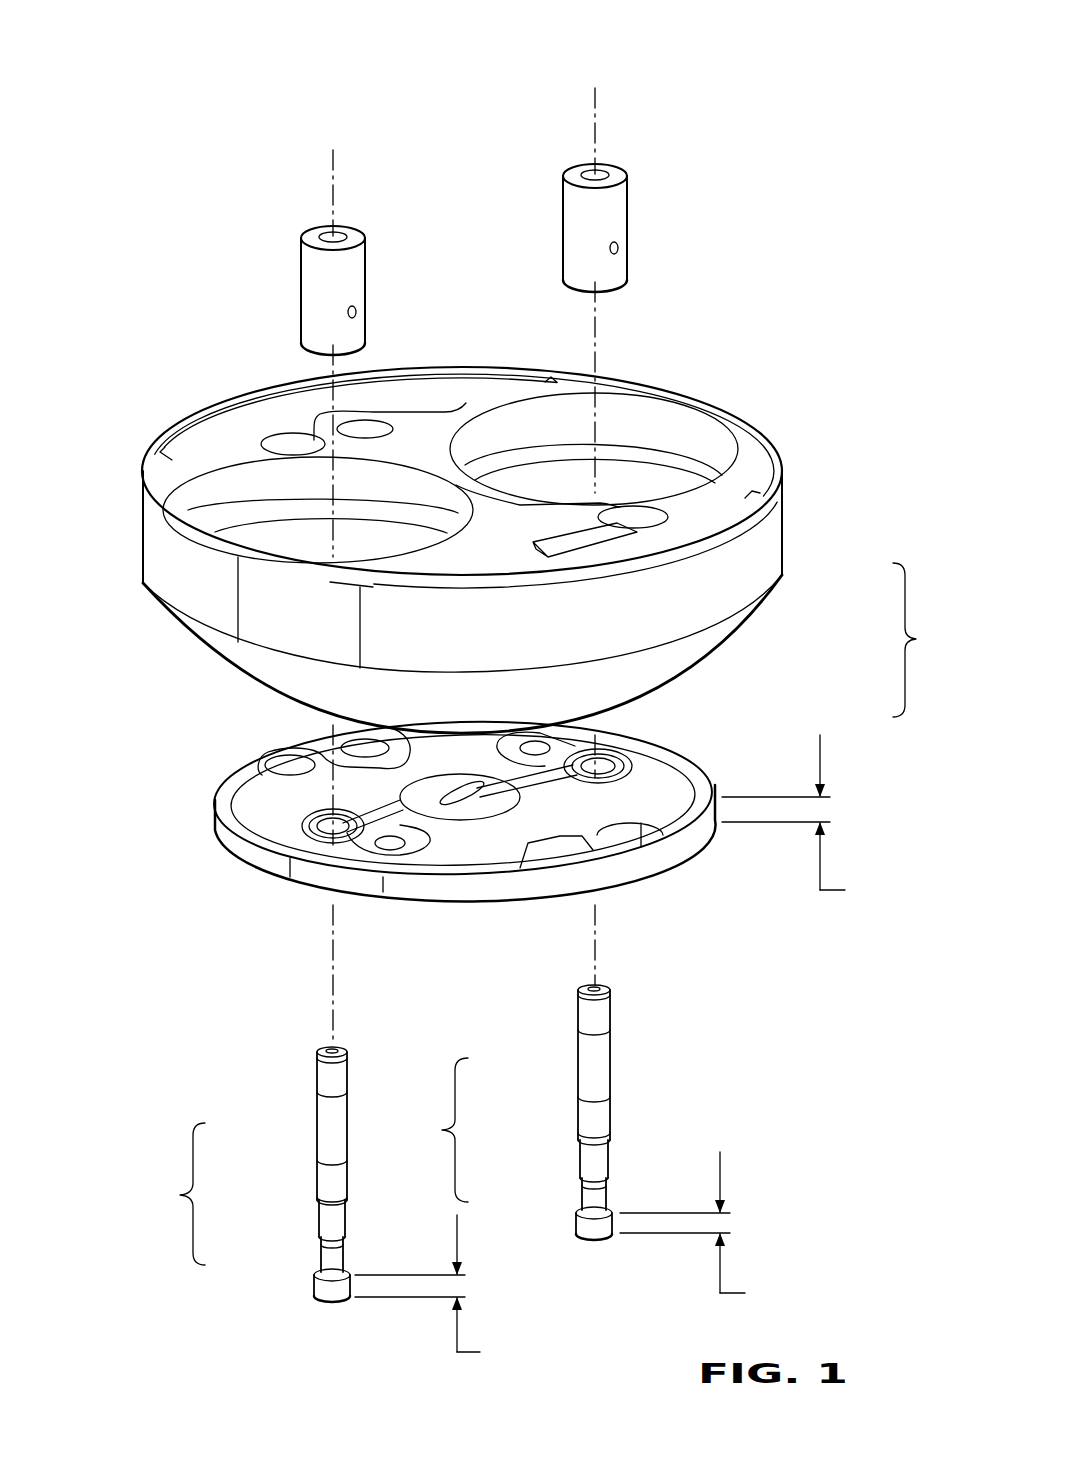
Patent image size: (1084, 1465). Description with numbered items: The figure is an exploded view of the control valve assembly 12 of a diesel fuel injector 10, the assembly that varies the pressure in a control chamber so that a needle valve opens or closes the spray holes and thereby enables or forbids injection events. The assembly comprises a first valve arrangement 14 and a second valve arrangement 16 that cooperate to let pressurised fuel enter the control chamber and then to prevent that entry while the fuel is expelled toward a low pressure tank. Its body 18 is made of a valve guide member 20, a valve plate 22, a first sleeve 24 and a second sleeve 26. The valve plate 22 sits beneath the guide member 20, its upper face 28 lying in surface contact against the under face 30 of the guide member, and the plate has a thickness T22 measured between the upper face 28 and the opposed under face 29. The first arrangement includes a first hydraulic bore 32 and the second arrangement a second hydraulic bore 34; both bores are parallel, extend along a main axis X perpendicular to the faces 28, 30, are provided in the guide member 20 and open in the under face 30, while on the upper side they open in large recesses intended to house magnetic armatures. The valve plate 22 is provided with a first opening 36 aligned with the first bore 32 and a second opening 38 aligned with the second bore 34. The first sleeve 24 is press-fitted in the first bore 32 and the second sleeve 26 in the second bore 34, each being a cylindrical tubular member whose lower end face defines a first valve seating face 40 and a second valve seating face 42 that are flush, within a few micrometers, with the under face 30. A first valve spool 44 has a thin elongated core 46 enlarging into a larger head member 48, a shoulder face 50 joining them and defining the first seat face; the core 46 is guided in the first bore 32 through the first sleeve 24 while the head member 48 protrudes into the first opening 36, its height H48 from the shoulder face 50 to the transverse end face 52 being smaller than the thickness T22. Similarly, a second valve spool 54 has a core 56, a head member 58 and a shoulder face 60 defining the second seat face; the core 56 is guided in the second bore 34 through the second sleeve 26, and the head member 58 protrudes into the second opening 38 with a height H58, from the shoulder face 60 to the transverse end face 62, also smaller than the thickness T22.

The fuel injector 10 is at (822, 118).
The control valve assembly 12 is at (822, 238).
The first valve arrangement 14 is at (471, 508).
The second valve arrangement 16 is at (718, 163).
The body 18 is at (502, 633).
The valve guide member 20 is at (471, 519).
The valve plate 22 is at (478, 786).
The first sleeve 24 is at (265, 296).
The second sleeve 26 is at (644, 213).
The upper face 28 is at (222, 805).
The under face 29 is at (230, 868).
The under face 30 is at (253, 706).
The first hydraulic bore 32 is at (273, 524).
The second hydraulic bore 34 is at (650, 458).
The first opening 36 is at (330, 832).
The second opening 38 is at (604, 757).
The first valve seating face 40 is at (305, 346).
The second valve seating face 42 is at (618, 282).
The first valve spool 44 is at (271, 1201).
The core 46 is at (320, 1118).
The head member 48 is at (299, 1269).
The shoulder face 50 is at (350, 1275).
The transverse end face 52 is at (330, 1302).
The second valve spool 54 is at (531, 1146).
The core 56 is at (582, 1057).
The head member 58 is at (561, 1214).
The shoulder face 60 is at (612, 1222).
The transverse end face 62 is at (598, 1240).
The main axis X is at (333, 152).
The thickness T22 is at (811, 820).
The height H48 is at (448, 1291).
The height H58 is at (713, 1230).